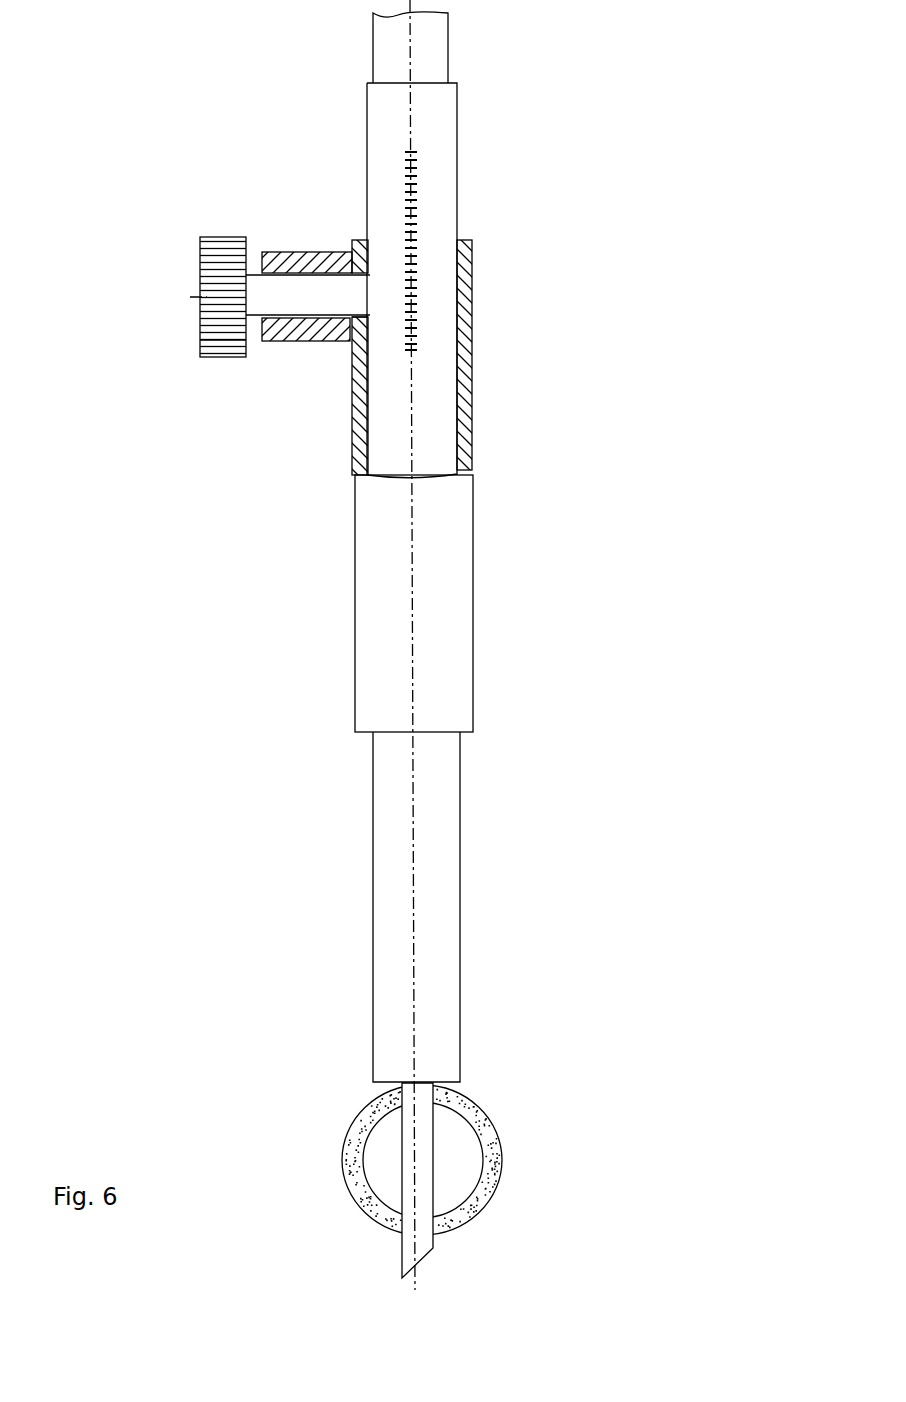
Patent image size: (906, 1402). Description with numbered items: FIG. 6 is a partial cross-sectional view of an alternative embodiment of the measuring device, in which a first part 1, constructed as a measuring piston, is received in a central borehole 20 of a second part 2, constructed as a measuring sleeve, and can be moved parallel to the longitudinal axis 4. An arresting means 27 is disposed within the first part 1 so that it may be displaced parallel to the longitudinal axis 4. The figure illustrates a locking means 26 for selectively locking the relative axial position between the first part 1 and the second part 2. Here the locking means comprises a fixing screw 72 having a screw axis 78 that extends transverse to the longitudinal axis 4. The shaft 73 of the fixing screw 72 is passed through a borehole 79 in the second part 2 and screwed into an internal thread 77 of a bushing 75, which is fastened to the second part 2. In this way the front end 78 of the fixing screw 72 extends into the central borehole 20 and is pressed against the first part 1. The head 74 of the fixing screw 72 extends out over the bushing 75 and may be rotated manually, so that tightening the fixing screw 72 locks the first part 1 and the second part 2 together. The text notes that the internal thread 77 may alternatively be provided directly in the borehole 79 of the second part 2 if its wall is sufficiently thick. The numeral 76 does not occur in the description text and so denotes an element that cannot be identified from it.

The first part 1 is at (437, 392).
The second part 2 is at (460, 715).
The longitudinal axis 4 is at (415, 975).
The central borehole 20 is at (463, 452).
The locking means 26 is at (290, 358).
The arresting means 27 is at (470, 26).
The fixing screw 72 is at (188, 253).
The shaft 73 is at (270, 290).
The head 74 is at (207, 338).
The bushing 75 is at (290, 256).
The knob axis 76 is at (190, 297).
The internal thread 77 is at (340, 262).
The screw axis 78 is at (362, 302).
The borehole 79 is at (362, 242).